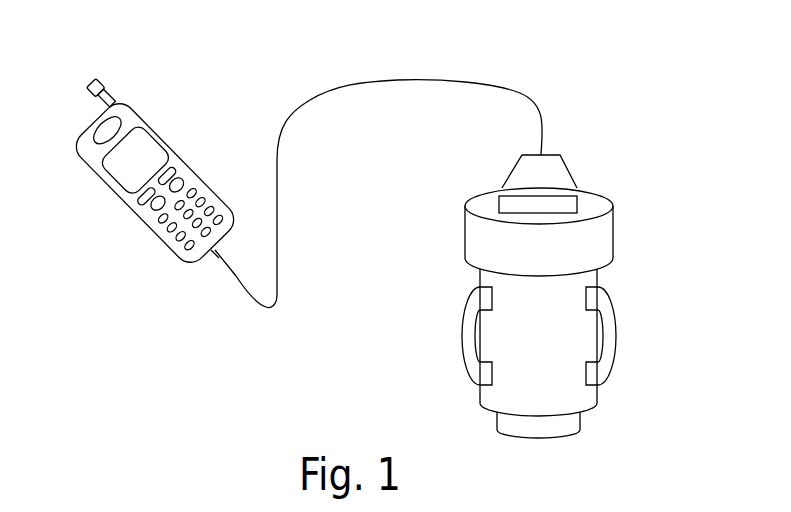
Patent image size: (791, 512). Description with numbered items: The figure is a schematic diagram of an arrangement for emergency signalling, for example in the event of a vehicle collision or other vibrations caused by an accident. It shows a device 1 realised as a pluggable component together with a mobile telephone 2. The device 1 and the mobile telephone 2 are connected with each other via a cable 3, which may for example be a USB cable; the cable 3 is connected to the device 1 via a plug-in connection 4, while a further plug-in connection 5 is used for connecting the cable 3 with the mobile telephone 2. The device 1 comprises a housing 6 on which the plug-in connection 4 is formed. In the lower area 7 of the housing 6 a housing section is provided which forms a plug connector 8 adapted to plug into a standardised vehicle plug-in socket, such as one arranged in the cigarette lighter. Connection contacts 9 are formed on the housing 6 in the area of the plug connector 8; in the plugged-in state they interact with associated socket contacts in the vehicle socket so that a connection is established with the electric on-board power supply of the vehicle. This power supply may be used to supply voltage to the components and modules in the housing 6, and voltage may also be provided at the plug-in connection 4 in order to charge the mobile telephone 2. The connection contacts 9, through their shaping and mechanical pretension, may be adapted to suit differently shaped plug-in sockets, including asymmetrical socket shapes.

The device 1 is at (539, 285).
The mobile telephone 2 is at (132, 110).
The cable 3 is at (397, 78).
The plug-in connection 4 is at (553, 186).
The further plug-in connection 5 is at (213, 257).
The housing 6 is at (475, 237).
The lower area 7 is at (492, 343).
The plug connector 8 is at (570, 400).
The connection contacts 9 is at (476, 333).